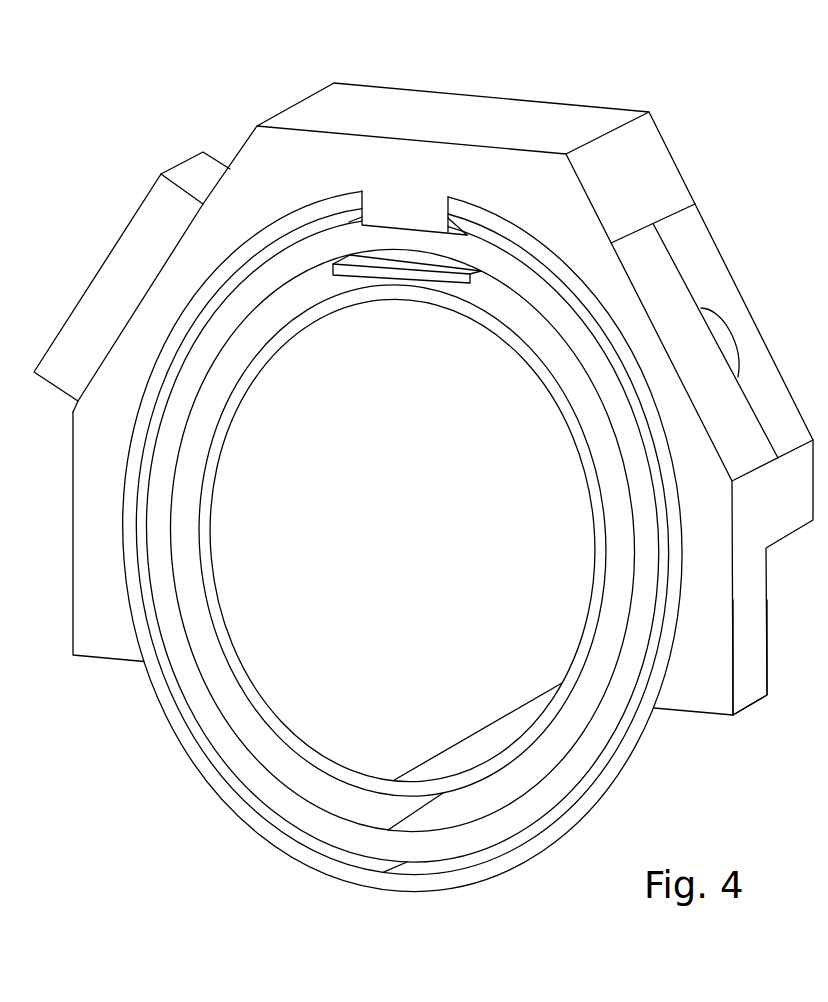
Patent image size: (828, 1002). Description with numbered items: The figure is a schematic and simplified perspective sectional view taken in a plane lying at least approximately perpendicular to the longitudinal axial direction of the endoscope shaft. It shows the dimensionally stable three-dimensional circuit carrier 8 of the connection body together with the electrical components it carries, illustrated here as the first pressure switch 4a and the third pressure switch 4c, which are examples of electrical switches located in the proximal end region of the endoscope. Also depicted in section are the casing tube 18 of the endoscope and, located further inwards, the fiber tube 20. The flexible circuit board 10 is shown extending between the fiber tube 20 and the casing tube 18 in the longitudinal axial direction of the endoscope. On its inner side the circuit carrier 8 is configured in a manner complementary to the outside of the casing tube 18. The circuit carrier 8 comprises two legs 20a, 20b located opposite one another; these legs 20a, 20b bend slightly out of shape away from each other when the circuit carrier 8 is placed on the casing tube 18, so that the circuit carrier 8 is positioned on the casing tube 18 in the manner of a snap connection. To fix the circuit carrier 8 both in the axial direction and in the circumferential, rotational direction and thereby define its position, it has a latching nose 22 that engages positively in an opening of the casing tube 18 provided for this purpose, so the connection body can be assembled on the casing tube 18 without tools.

The circuit carrier 8 is at (549, 187).
The first pressure switch 4a is at (696, 247).
The third pressure switch 4c is at (132, 255).
The latching nose 22 is at (412, 220).
The flexible circuit board 10 is at (430, 263).
The casing tube 18 is at (190, 742).
The fiber tube 20 is at (312, 748).
The leg 20a is at (101, 642).
The leg 20b is at (706, 690).